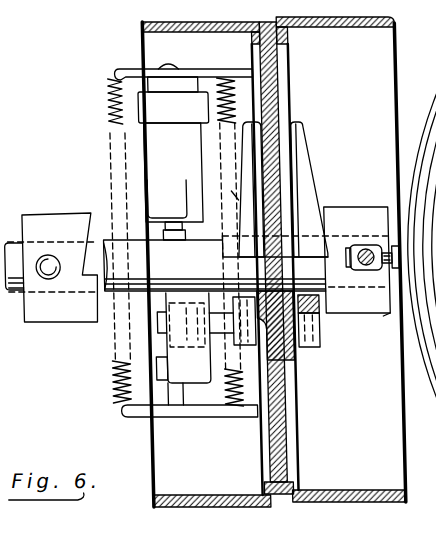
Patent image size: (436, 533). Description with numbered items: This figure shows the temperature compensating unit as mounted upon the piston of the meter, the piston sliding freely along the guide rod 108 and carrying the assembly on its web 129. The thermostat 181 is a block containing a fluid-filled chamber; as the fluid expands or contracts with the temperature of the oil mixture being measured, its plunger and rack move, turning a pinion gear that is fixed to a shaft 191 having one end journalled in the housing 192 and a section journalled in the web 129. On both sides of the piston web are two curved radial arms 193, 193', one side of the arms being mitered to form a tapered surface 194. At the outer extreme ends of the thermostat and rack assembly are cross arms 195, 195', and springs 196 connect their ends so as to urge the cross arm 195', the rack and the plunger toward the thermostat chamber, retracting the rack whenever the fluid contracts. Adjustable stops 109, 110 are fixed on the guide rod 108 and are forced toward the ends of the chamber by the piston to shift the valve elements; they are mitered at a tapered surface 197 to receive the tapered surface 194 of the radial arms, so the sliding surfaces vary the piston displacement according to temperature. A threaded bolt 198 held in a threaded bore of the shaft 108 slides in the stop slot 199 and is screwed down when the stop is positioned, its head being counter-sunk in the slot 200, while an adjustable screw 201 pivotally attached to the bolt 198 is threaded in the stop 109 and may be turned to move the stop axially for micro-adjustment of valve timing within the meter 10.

The housing 10 is at (385, 47).
The guide rod 108 is at (245, 263).
The adjustable stop 109 is at (367, 208).
The adjustable stop 110 is at (74, 213).
The web of the piston 129 is at (282, 72).
The thermostat 181 is at (160, 143).
The shaft 191 is at (318, 328).
The housing 192 is at (196, 384).
The curved radial arm 193 is at (298, 189).
The curved radial arm 193' is at (183, 176).
The tapered surface 194 is at (308, 138).
The cross arm 195 is at (168, 57).
The cross arm 195' is at (178, 428).
The spring 196 is at (114, 107).
The tapered surface 197 is at (362, 231).
The threaded bolt 198 is at (374, 266).
The stop slot 199 is at (350, 262).
The slot 200 is at (382, 316).
The adjustable screw 201 is at (414, 170).